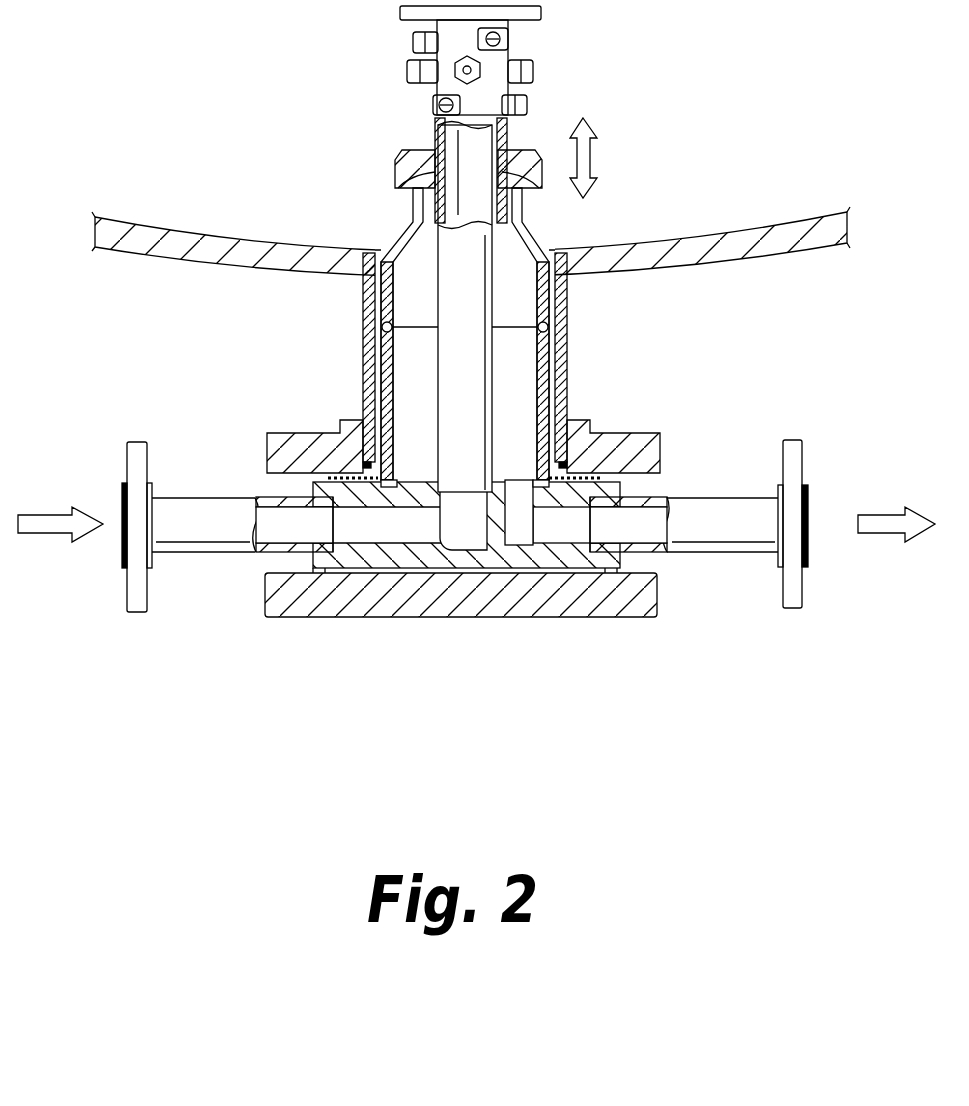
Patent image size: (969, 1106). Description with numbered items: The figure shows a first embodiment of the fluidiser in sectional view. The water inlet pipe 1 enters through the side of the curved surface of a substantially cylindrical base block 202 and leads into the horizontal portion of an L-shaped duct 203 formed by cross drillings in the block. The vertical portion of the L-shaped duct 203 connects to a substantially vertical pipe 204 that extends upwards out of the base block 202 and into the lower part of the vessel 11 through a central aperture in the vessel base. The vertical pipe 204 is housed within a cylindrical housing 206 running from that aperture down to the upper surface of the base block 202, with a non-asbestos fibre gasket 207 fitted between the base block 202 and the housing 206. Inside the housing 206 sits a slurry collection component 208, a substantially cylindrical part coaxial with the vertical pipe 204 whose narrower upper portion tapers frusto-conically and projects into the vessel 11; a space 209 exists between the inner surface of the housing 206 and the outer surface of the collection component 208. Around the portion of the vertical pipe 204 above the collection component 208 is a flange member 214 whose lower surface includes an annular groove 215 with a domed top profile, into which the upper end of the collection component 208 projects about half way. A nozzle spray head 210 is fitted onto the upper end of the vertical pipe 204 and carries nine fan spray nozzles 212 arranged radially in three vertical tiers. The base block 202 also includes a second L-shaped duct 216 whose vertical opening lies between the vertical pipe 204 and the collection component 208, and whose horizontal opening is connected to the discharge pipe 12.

The water inlet pipe 1 is at (210, 510).
The vessel 11 is at (793, 240).
The discharge pipe 12 is at (653, 550).
The base block 202 is at (422, 557).
The L-shaped duct 203 is at (470, 543).
The vertical pipe 204 is at (453, 297).
The cylindrical housing 206 is at (568, 318).
The non-asbestos fibre gasket 207 is at (622, 480).
The slurry collection component 208 is at (378, 383).
The space 209 is at (552, 383).
The nozzle spray head 210 is at (493, 65).
The fan spray nozzles 212 is at (533, 70).
The flange member 214 is at (397, 165).
The annular groove 215 is at (540, 200).
The second L-shaped duct 216 is at (568, 540).